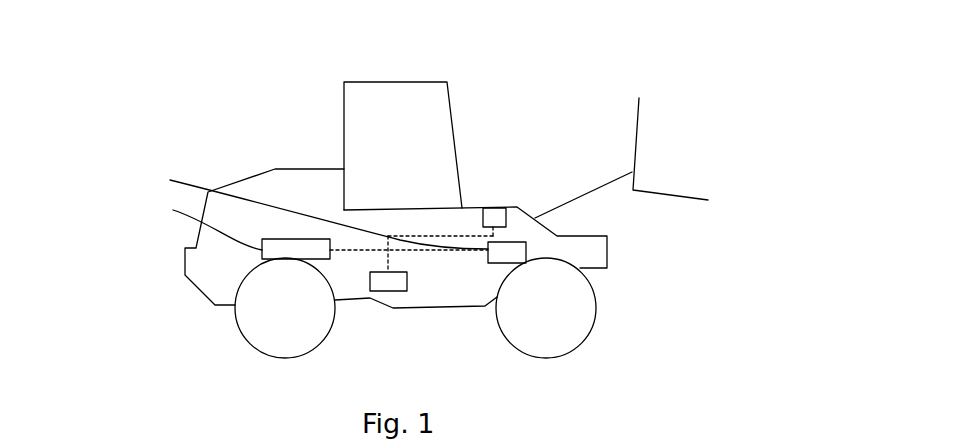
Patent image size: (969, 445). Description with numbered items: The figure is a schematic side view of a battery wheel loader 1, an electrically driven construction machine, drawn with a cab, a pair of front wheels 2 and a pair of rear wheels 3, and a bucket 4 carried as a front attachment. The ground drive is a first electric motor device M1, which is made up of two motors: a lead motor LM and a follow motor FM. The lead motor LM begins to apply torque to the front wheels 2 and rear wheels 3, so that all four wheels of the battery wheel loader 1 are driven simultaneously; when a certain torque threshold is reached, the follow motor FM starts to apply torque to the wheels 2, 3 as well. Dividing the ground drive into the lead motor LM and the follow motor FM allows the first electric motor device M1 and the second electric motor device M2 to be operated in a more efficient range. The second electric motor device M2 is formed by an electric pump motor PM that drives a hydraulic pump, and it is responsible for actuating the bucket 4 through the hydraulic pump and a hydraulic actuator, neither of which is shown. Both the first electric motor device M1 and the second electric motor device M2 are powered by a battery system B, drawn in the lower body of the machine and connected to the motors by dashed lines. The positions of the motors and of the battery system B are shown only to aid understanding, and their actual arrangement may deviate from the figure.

The battery wheel loader 1 is at (226, 117).
The front wheels 2 is at (587, 340).
The rear wheels 3 is at (250, 347).
The bucket 4 is at (638, 131).
The battery system B is at (392, 290).
The first electric motor device M1 is at (299, 217).
The lead motor LM is at (326, 217).
The follow motor FM is at (229, 231).
The electric pump motor PM is at (579, 136).
The second electric motor device M2 is at (507, 220).